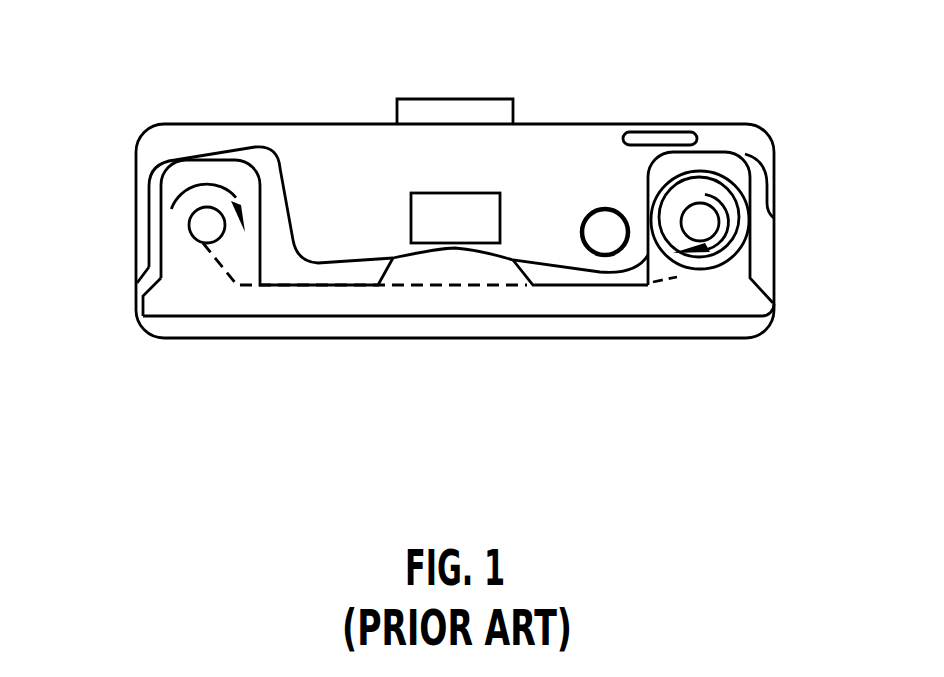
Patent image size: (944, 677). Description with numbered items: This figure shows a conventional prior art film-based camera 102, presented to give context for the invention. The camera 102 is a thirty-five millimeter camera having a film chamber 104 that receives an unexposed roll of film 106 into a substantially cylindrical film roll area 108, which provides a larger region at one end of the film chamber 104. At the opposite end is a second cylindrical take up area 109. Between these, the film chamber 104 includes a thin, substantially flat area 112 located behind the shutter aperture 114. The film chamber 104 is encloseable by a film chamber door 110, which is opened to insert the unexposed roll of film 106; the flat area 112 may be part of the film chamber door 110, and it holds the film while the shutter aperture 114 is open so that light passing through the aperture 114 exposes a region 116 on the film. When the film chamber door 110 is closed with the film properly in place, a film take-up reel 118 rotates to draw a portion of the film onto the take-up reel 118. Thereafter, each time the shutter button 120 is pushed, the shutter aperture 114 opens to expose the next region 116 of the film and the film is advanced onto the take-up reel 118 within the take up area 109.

The film-based camera 102 is at (438, 235).
The film chamber 104 is at (697, 178).
The unexposed roll of film 106 is at (741, 200).
The cylindrical film roll area 108 is at (740, 263).
The cylindrical take up area 109 is at (202, 175).
The film chamber door 110 is at (230, 328).
The flat area 112 is at (383, 307).
The shutter aperture 114 is at (467, 212).
The region on the film 116 is at (445, 277).
The film take-up reel 118 is at (203, 246).
The shutter button 120 is at (607, 223).